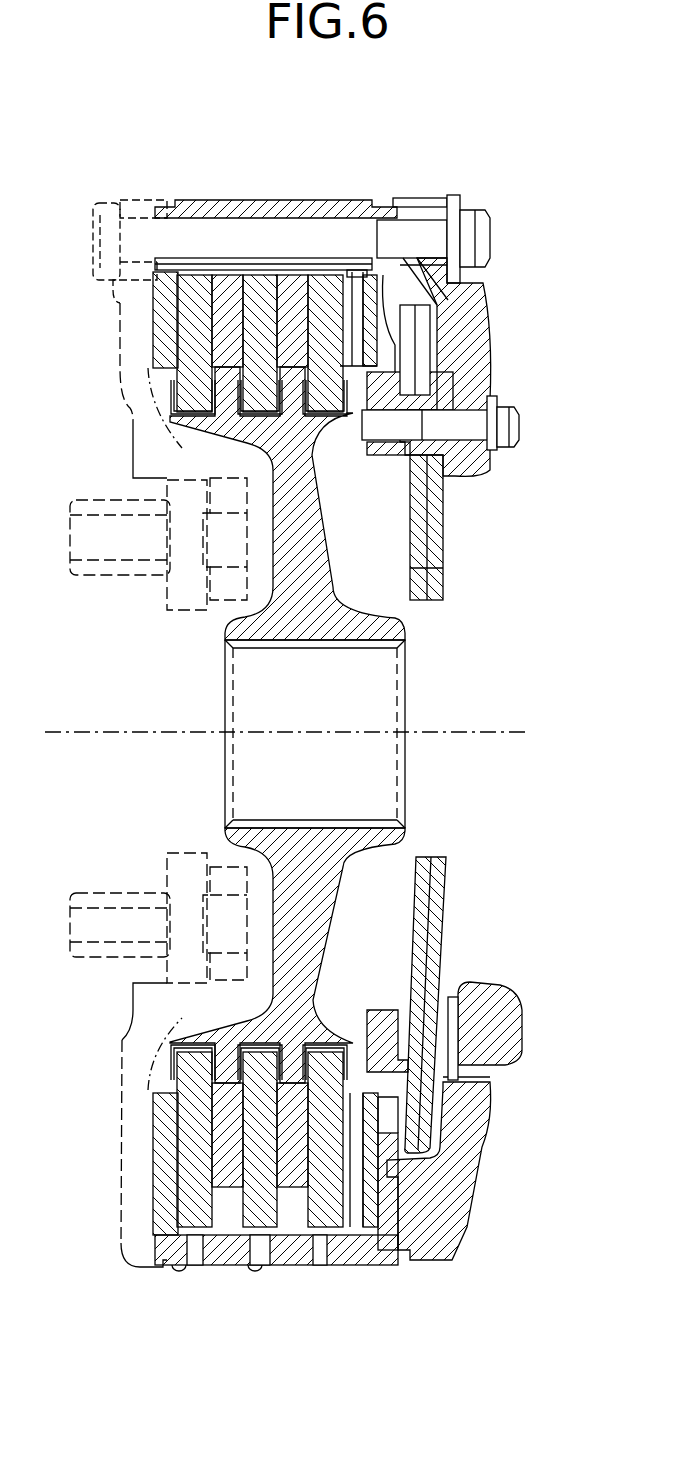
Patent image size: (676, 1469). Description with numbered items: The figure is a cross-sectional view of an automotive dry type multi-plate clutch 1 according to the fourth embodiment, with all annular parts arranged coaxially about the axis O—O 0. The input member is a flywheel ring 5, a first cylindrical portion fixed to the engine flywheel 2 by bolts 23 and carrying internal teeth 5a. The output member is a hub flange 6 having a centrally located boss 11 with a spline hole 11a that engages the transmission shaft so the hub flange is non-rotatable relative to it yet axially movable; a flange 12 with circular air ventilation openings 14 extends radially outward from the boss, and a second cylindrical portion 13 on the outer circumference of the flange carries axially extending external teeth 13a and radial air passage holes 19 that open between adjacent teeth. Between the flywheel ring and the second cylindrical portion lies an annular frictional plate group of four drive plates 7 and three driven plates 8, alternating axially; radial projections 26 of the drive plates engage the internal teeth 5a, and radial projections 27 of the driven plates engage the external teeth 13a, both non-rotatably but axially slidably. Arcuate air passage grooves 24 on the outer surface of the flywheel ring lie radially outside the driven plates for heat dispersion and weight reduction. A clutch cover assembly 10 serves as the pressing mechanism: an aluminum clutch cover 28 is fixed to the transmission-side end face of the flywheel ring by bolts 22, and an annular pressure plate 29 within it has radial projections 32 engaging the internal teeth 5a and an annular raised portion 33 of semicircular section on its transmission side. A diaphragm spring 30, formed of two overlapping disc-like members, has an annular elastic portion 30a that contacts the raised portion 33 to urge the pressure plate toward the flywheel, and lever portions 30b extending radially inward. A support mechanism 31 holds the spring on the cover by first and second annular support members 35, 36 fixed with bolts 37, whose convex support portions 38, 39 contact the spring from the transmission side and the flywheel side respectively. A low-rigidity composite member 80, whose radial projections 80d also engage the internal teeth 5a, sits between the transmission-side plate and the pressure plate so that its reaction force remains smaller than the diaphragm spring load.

The multi-plate clutch 1 is at (452, 112).
The flywheel 2 is at (120, 305).
The flywheel ring 5 is at (175, 200).
The internal teeth 5a is at (195, 1215).
The hub flange 6 is at (418, 740).
The drive plates 7 is at (340, 262).
The driven plates 8 is at (200, 262).
The clutch cover assembly 10 is at (487, 490).
The boss 11 is at (413, 620).
The spline hole 11a is at (262, 650).
The flange 12 is at (290, 535).
The second cylindrical portion 13 is at (232, 1012).
The external teeth 13a is at (335, 448).
The air ventilation openings 14 is at (275, 925).
The air passage holes 19 is at (330, 1020).
The bolts 22 is at (486, 240).
The bolts 23 is at (100, 200).
The air passage grooves 24 is at (258, 1262).
The radial projections 26 is at (225, 1210).
The radial projections 27 is at (190, 1065).
The clutch cover 28 is at (483, 372).
The pressure plate 29 is at (388, 1160).
The diaphragm spring 30 is at (447, 543).
The annular elastic portion 30a is at (422, 322).
The lever portions 30b is at (442, 885).
The support mechanism 31 is at (387, 460).
The radial projections 32 is at (388, 1212).
The annular raised portion 33 is at (400, 262).
The first annular support member 35 is at (459, 1027).
The second annular support member 36 is at (392, 1005).
The bolts 37 is at (510, 435).
The support portion 38 is at (490, 1077).
The support portion 39 is at (491, 1105).
The composite member 80 is at (358, 268).
The radial projections 80d is at (362, 1220).
The axis O-O 0 is at (286, 730).